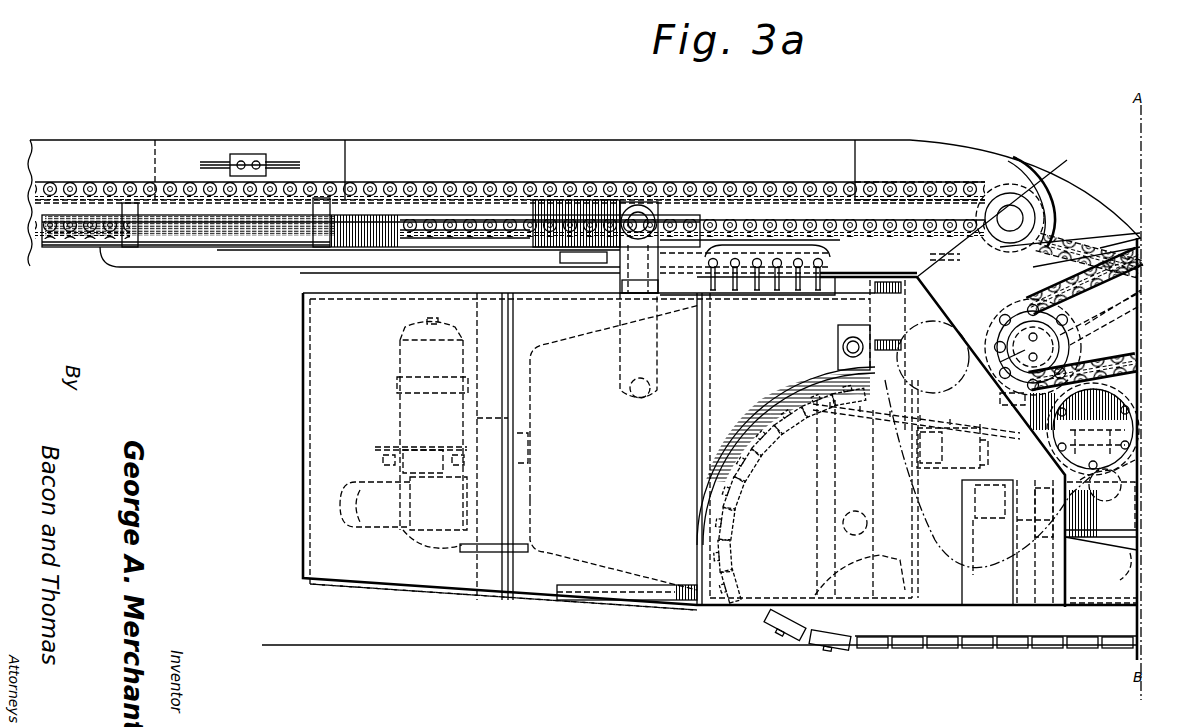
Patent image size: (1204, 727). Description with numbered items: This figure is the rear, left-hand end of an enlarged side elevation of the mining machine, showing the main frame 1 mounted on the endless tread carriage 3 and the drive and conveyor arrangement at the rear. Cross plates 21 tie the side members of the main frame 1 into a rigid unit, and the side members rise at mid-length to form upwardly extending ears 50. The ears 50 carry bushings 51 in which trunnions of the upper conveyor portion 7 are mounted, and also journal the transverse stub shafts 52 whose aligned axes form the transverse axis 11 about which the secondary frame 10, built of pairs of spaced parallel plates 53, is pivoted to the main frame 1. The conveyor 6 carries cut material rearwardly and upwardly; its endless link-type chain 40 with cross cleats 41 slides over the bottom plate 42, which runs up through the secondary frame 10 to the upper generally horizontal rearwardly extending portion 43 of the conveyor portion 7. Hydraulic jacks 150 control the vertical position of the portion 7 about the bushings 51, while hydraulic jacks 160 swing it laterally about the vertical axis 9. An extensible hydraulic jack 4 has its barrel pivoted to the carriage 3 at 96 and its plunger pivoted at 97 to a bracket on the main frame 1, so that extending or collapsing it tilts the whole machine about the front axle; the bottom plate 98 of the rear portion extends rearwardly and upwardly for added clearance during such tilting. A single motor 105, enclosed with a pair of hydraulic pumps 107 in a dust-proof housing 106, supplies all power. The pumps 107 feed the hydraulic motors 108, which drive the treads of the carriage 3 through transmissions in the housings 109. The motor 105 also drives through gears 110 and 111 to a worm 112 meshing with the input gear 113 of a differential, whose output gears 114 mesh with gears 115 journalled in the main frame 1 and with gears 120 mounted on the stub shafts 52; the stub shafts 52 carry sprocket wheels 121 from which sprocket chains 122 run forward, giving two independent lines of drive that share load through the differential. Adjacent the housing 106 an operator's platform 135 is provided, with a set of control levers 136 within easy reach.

The main frame 1 is at (318, 337).
The endless tread carriage 3 is at (960, 645).
The extensible hydraulic jack 4 is at (830, 492).
The conveyor 6 is at (964, 190).
The upper horizontal rearwardly extending conveyor portion 7 is at (610, 150).
The vertical axis 9 is at (577, 258).
The secondary frame 10 is at (1117, 232).
The transverse axis 11 is at (968, 366).
The cross plates 21 is at (1112, 610).
The endless link-type chain 40 is at (920, 186).
The cross cleats 41 is at (424, 186).
The plate 42 is at (1141, 330).
The upper generally horizontal rearwardly extending portion 43 is at (640, 196).
The upwardly extending ears 50 is at (945, 254).
The bushings 51 is at (1023, 205).
The transverse stub shafts 52 is at (990, 306).
The spaced parallel plates 53 is at (1133, 238).
The pivot of jack barrel 96 is at (850, 535).
The pivot of jack plunger 97 is at (838, 348).
The bottom plate 98 is at (405, 583).
The motor 105 is at (565, 555).
The dust-proof housing 106 is at (321, 423).
The hydraulic pumps 107 is at (425, 520).
The hydraulic motors 108 is at (878, 372).
The housings 109 is at (1033, 545).
The gear 110 is at (990, 452).
The gear 111 is at (987, 542).
The worm 112 is at (1101, 525).
The input gear 113 is at (1138, 472).
The output gears 114 is at (1136, 420).
The gears 115 is at (1125, 575).
The gears 120 is at (1080, 346).
The sprocket wheels 121 is at (1003, 398).
The sprocket chains 122 is at (1135, 258).
The platform 135 is at (658, 597).
The control levers 136 is at (758, 238).
The hydraulic jacks 150 is at (625, 284).
The hydraulic jacks 160 is at (232, 222).